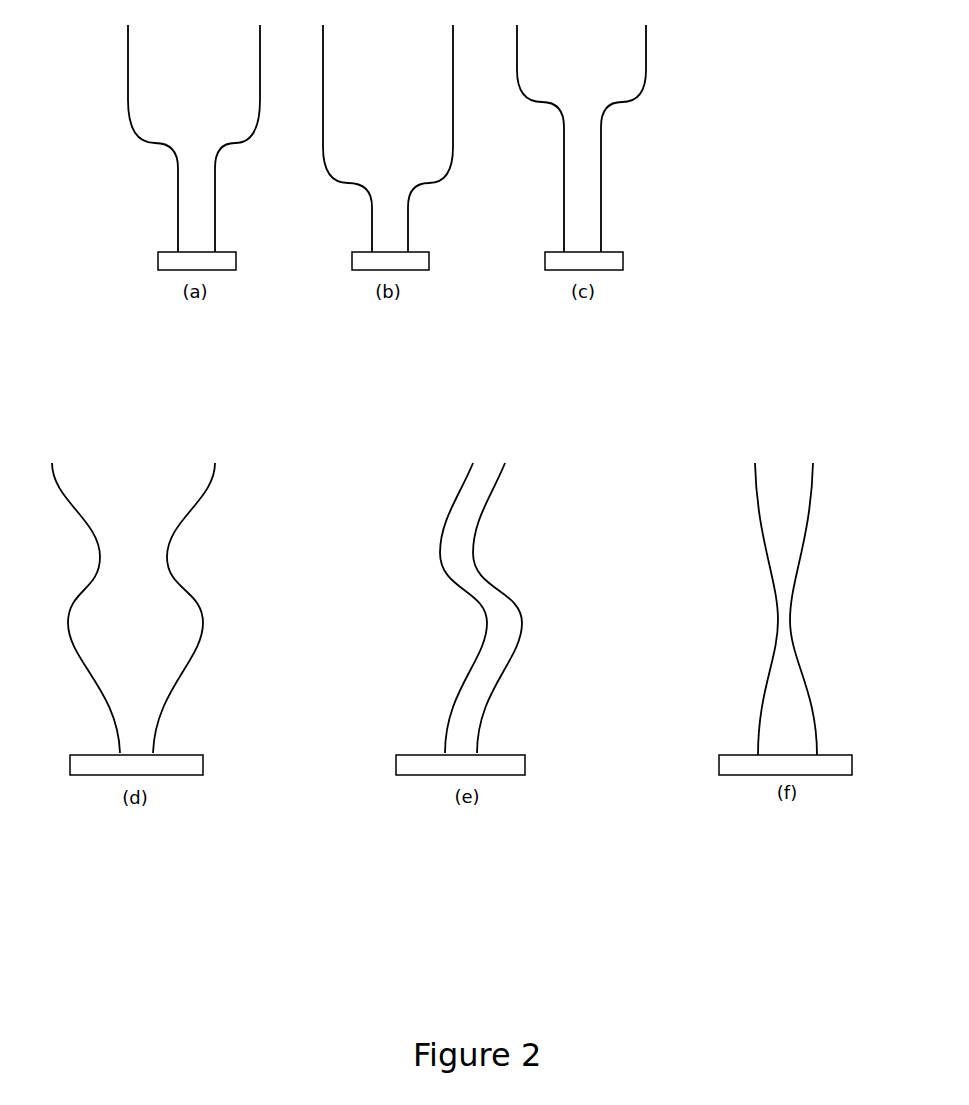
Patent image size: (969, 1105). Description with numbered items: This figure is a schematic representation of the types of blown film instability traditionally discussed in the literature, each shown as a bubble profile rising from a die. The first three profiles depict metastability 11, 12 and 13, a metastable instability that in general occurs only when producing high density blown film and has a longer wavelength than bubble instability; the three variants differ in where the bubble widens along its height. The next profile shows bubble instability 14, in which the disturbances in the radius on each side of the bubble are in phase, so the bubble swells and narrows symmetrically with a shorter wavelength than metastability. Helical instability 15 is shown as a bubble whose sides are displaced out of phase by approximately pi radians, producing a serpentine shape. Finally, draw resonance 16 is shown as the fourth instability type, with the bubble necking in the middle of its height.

The metastability 11 is at (194, 138).
The metastability 12 is at (388, 138).
The metastability 13 is at (581, 138).
The bubble instability 14 is at (133, 608).
The helical instability 15 is at (472, 608).
The draw resonance 16 is at (786, 609).